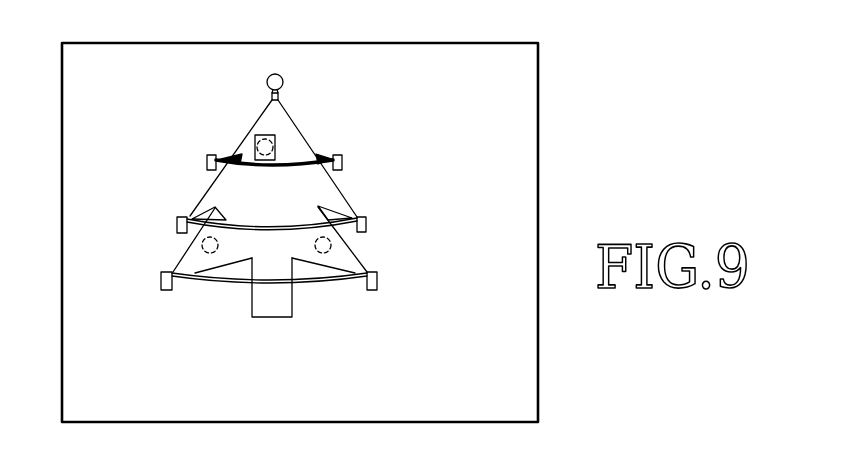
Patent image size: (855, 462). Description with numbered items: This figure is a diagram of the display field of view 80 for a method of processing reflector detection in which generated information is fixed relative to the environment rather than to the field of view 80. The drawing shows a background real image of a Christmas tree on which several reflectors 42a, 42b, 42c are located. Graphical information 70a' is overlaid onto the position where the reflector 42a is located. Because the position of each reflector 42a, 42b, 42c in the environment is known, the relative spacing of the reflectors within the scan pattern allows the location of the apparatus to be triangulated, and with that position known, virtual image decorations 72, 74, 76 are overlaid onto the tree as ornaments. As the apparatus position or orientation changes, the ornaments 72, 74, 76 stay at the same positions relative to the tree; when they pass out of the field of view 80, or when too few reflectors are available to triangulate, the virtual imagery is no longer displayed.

The field of view 80 is at (538, 118).
The virtual image decoration 72 is at (283, 78).
The graphical information 70a' is at (231, 118).
The reflector 42a is at (275, 140).
The reflector 42b is at (200, 243).
The reflector 42c is at (331, 246).
The virtual image decoration 76 is at (270, 166).
The virtual image decoration 74 is at (207, 163).